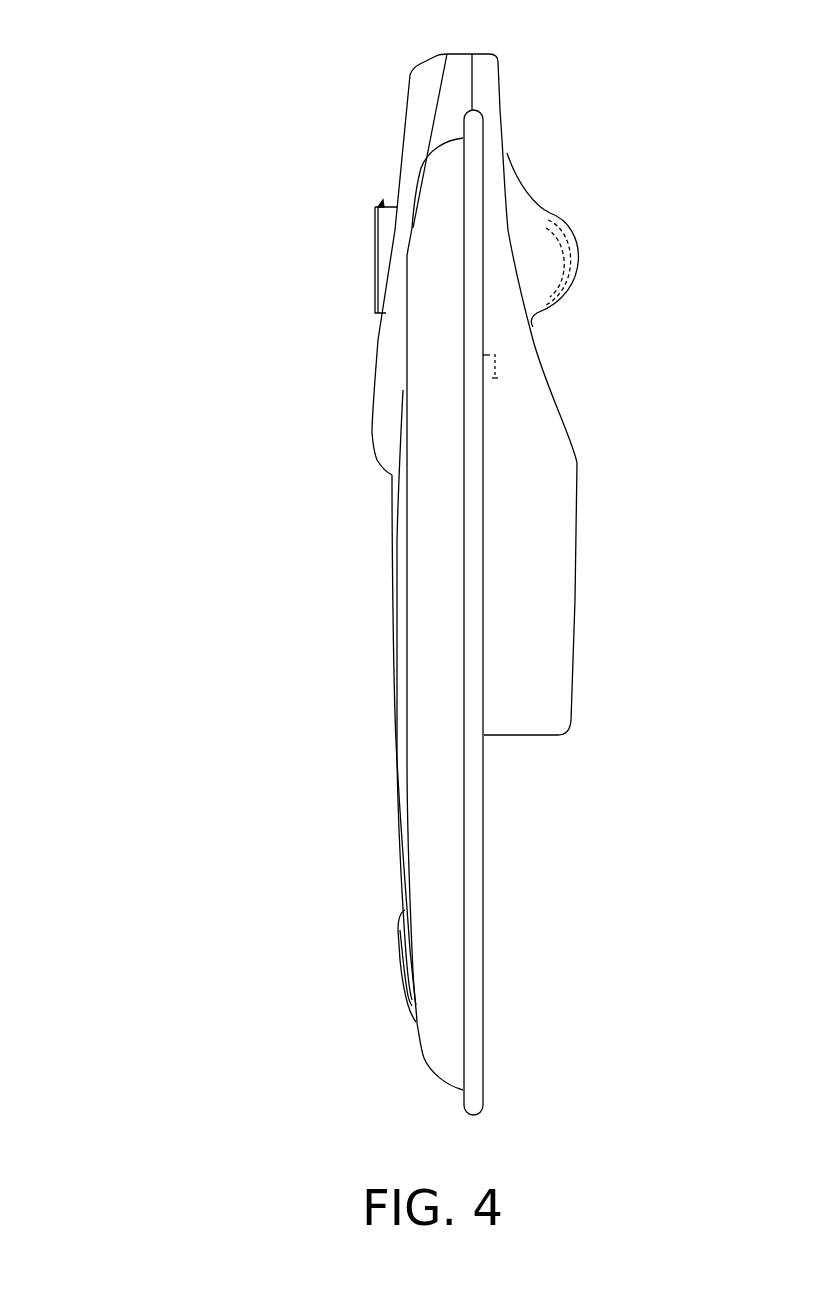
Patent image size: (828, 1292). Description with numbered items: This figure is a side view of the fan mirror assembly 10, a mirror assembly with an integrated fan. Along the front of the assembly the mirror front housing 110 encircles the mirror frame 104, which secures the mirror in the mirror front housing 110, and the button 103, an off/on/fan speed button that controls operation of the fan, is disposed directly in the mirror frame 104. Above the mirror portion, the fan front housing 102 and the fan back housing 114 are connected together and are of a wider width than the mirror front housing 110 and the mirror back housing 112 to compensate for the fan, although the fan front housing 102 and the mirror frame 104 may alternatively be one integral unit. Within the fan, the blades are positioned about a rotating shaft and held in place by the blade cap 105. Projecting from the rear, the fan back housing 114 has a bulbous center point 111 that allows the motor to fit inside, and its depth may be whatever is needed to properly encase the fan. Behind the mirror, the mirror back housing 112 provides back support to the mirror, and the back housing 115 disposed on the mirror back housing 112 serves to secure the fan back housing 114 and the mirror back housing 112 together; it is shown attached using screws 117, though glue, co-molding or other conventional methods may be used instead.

The fan mirror assembly 10 is at (66, 73).
The fan front housing 102 is at (412, 103).
The button 103 is at (405, 978).
The mirror frame 104 is at (413, 967).
The blade cap 105 is at (383, 248).
The mirror front housing 110 is at (442, 1047).
The bulbous center point 111 is at (567, 225).
The mirror back housing 112 is at (472, 962).
The fan back housing 114 is at (543, 278).
The back housing 115 is at (537, 622).
The screws 117 is at (495, 367).